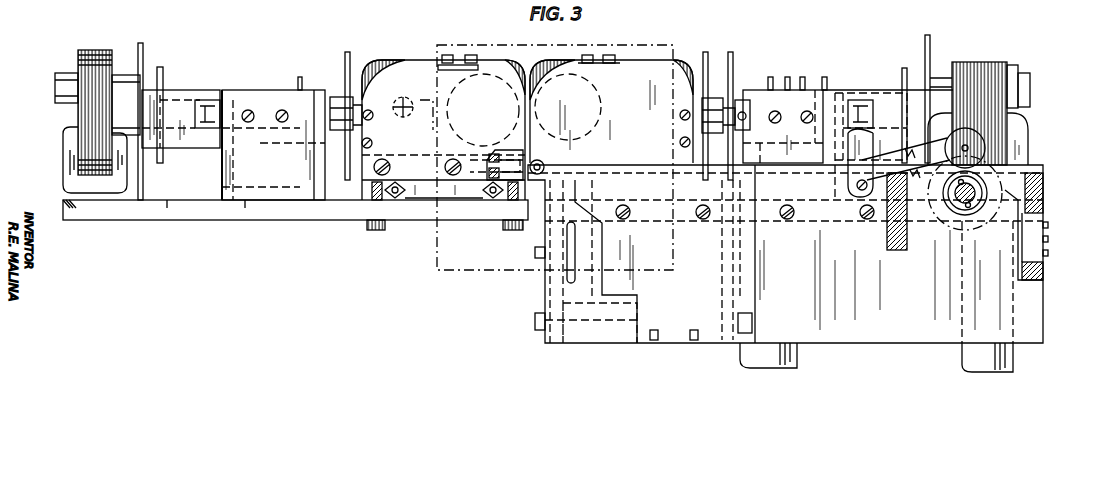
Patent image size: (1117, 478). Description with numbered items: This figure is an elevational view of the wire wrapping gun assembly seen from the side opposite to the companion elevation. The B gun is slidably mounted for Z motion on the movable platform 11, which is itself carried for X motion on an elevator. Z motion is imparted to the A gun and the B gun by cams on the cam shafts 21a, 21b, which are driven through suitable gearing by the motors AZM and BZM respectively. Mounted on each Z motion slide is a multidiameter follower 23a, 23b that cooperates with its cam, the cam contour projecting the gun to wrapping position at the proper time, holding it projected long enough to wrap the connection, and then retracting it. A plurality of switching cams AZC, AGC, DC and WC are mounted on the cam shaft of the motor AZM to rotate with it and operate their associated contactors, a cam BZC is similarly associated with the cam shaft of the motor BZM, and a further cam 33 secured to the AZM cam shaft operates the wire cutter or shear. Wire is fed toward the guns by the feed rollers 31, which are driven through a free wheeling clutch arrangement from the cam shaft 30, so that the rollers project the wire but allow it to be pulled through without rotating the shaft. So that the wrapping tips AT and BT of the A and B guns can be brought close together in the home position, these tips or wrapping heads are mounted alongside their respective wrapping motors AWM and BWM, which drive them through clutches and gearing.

The movable platform 11 is at (270, 222).
The B gun Z motor BZM is at (97, 50).
The B-zone clutch BZC is at (300, 77).
The multidiameter follower 23b is at (338, 98).
The cam shaft 21b is at (349, 53).
The B gun wrapping motor BWM is at (490, 74).
The B gun wrapping tip BT is at (495, 160).
The A gun wrapping tip AT is at (550, 153).
The A gun wrapping motor AWM is at (567, 75).
The cam shaft 21a is at (704, 55).
The multidiameter follower 23a is at (715, 100).
The cam 33 is at (733, 55).
The switching cam WC is at (770, 77).
The switching cam DC is at (787, 77).
The switching cam AGC is at (802, 77).
The switching cam AZC is at (825, 77).
The A gun Z motor AZM is at (983, 72).
The feed rollers 31 is at (987, 142).
The cam shaft 30 is at (985, 191).